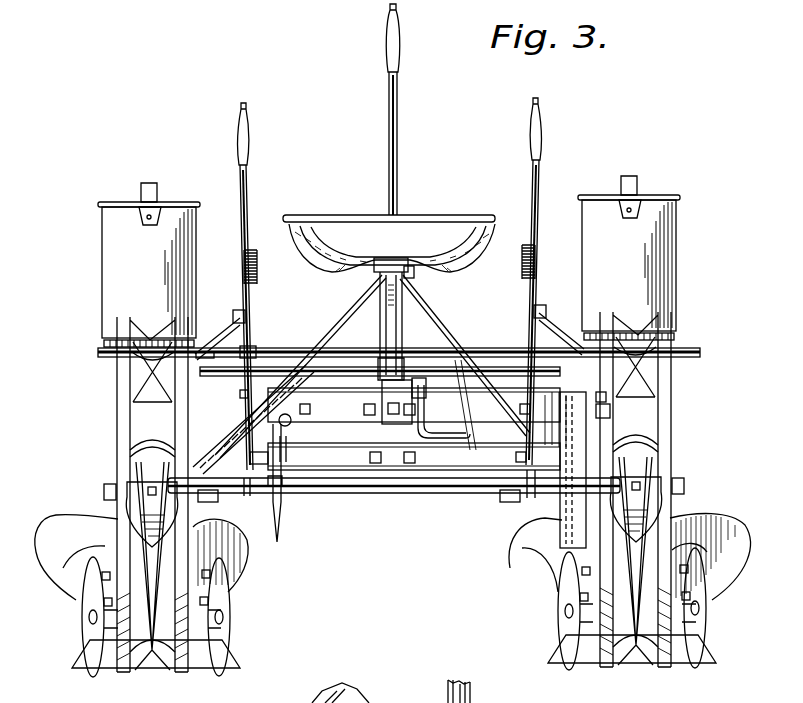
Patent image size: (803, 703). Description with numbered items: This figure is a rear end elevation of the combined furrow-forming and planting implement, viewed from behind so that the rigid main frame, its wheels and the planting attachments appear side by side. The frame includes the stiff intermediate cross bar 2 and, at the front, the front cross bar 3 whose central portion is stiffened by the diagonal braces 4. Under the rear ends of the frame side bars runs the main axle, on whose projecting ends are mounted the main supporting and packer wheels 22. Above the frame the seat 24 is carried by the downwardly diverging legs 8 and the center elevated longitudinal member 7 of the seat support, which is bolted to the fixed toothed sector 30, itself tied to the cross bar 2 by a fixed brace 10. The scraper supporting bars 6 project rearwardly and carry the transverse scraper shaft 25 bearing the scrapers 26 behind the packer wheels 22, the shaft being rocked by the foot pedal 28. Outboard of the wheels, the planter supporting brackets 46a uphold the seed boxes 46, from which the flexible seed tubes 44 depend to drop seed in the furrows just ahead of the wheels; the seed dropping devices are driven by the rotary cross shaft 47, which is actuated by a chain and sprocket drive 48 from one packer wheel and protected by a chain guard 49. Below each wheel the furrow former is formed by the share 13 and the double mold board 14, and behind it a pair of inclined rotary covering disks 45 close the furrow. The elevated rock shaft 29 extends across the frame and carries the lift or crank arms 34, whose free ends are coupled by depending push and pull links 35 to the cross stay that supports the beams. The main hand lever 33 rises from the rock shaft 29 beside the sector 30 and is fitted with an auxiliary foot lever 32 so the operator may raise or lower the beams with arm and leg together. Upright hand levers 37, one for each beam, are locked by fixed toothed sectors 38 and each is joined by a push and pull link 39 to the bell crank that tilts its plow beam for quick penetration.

The intermediate cross bar 2 is at (365, 460).
The front cross bar 3 is at (392, 478).
The diagonal braces 4 is at (480, 462).
The scraper supporting bars 6 is at (506, 496).
The longitudinal member of the seat support 7 is at (636, 440).
The downwardly diverging legs 8 is at (446, 330).
The fixed brace 10 is at (380, 384).
The share 13 is at (684, 676).
The double mold board 14 is at (730, 572).
The supporting and packer wheels 22 is at (676, 462).
The seat 24 is at (434, 218).
The scraper shaft 25 is at (308, 500).
The scrapers 26 is at (650, 508).
The foot pedal 28 is at (278, 424).
The rock shaft 29 is at (450, 376).
The fixed toothed sector 30 is at (388, 322).
The auxiliary foot lever 32 is at (424, 452).
The hand lever 33 is at (398, 118).
The lift or crank arms 34 is at (258, 352).
The push and pull links 35 is at (265, 458).
The upright hand levers 37 is at (540, 174).
The fixed toothed sectors 38 is at (522, 290).
The push and pull link 39 is at (560, 316).
The flexible seed tubes 44 is at (470, 688).
The rotary covering disks 45 is at (708, 626).
The seed boxes 46 is at (389, 261).
The planter supporting brackets 46a is at (600, 396).
The rotary cross shaft 47 is at (490, 350).
The chain and sprocket drive 48 is at (612, 410).
The chain guard 49 is at (562, 538).